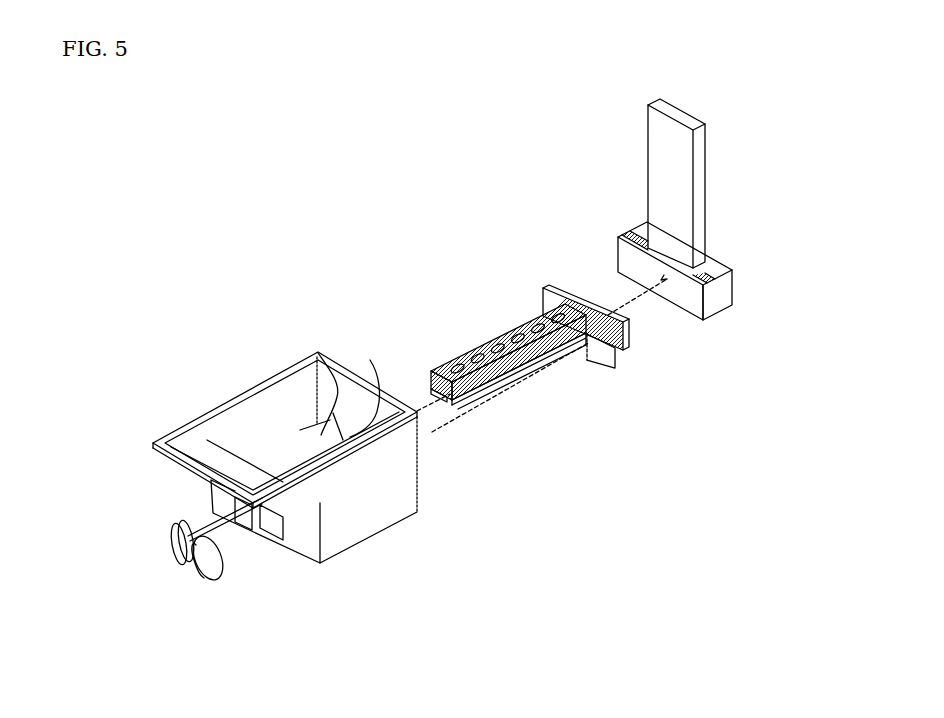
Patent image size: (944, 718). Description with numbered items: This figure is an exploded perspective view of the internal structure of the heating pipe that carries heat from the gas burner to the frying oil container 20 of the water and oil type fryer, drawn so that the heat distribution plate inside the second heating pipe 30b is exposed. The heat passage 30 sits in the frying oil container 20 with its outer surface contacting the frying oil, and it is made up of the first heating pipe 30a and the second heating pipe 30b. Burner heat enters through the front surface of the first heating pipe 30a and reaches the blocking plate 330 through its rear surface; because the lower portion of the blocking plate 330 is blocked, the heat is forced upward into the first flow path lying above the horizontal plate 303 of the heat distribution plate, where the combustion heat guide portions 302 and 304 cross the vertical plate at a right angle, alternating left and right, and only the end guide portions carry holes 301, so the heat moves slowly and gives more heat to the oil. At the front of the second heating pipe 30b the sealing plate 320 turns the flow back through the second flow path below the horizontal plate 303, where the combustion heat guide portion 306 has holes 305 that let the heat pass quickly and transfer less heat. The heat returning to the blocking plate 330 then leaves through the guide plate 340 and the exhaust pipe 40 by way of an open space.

The frying oil container 20 is at (268, 403).
The heat passage 30 is at (303, 625).
The first heating pipe 30a is at (370, 360).
The second heating pipe 30b is at (318, 352).
The exhaust pipe 40 is at (660, 150).
The hole 301 is at (450, 367).
The combustion heat guide portion 302 is at (478, 340).
The horizontal plate 303 is at (443, 380).
The combustion heat guide portion 304 is at (510, 328).
The hole 305 is at (473, 395).
The combustion heat guide portion 306 is at (505, 388).
The sealing plate 320 is at (170, 533).
The blocking plate 330 is at (548, 286).
The guide plate 340 is at (647, 236).